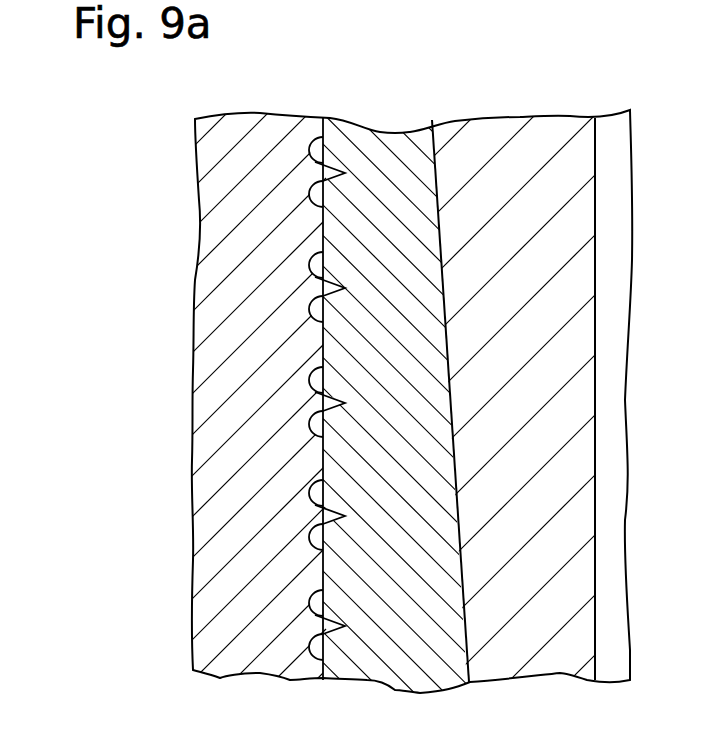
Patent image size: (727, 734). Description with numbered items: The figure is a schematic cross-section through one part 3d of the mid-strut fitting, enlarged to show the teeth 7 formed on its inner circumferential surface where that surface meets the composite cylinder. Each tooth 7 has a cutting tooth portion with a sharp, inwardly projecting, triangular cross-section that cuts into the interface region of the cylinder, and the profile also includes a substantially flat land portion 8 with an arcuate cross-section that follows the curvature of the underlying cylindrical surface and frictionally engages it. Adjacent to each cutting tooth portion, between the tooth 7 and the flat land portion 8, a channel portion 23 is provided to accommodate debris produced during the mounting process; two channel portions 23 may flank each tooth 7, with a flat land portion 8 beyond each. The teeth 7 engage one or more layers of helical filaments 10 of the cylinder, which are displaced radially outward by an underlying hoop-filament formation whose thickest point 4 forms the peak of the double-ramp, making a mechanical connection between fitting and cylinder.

The part of the mid-strut fitting 3d is at (254, 204).
The thickest point 4 is at (535, 195).
The teeth 7 is at (328, 178).
The flat land portion 8 is at (322, 232).
The helical filaments 10 is at (383, 193).
The channel portion 23 is at (321, 148).